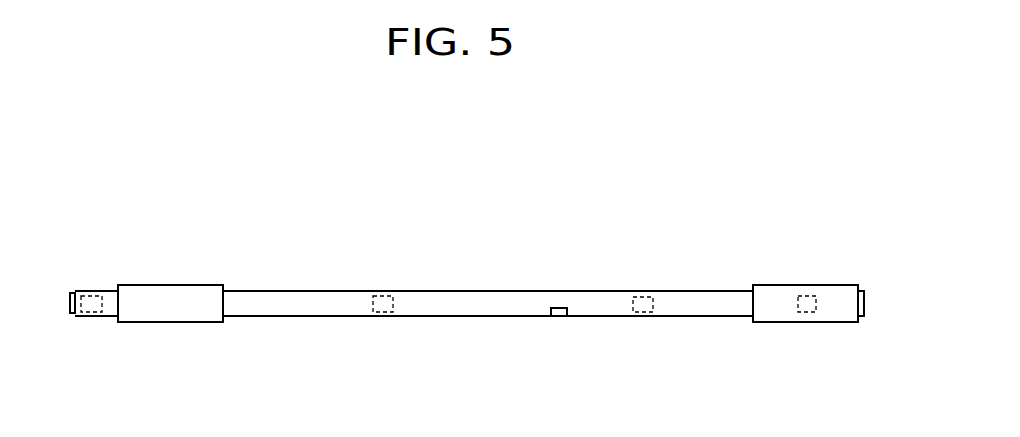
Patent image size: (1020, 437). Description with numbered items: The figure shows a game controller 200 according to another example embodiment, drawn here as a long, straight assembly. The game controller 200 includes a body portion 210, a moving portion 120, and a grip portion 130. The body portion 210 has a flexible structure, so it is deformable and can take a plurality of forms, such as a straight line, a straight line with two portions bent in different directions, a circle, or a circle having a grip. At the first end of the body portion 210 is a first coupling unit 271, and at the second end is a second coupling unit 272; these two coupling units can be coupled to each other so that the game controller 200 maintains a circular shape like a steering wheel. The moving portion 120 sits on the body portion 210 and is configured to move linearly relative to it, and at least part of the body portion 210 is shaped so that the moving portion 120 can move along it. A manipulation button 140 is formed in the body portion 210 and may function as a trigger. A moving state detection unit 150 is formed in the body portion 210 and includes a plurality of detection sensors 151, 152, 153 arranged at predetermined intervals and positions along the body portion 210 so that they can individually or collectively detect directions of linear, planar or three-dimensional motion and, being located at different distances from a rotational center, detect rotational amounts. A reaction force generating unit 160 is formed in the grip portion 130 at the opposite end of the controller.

The game controller 200 is at (763, 205).
The body portion 210 is at (443, 310).
The moving portion 120 is at (168, 300).
The grip portion 130 is at (793, 322).
The manipulation button 140 is at (558, 316).
The moving state detection unit 150 is at (97, 226).
The detection sensor 151 is at (100, 297).
The detection sensor 152 is at (383, 298).
The detection sensor 153 is at (643, 298).
The reaction force generating unit 160 is at (807, 298).
The first coupling unit 271 is at (72, 291).
The second coupling unit 272 is at (858, 320).